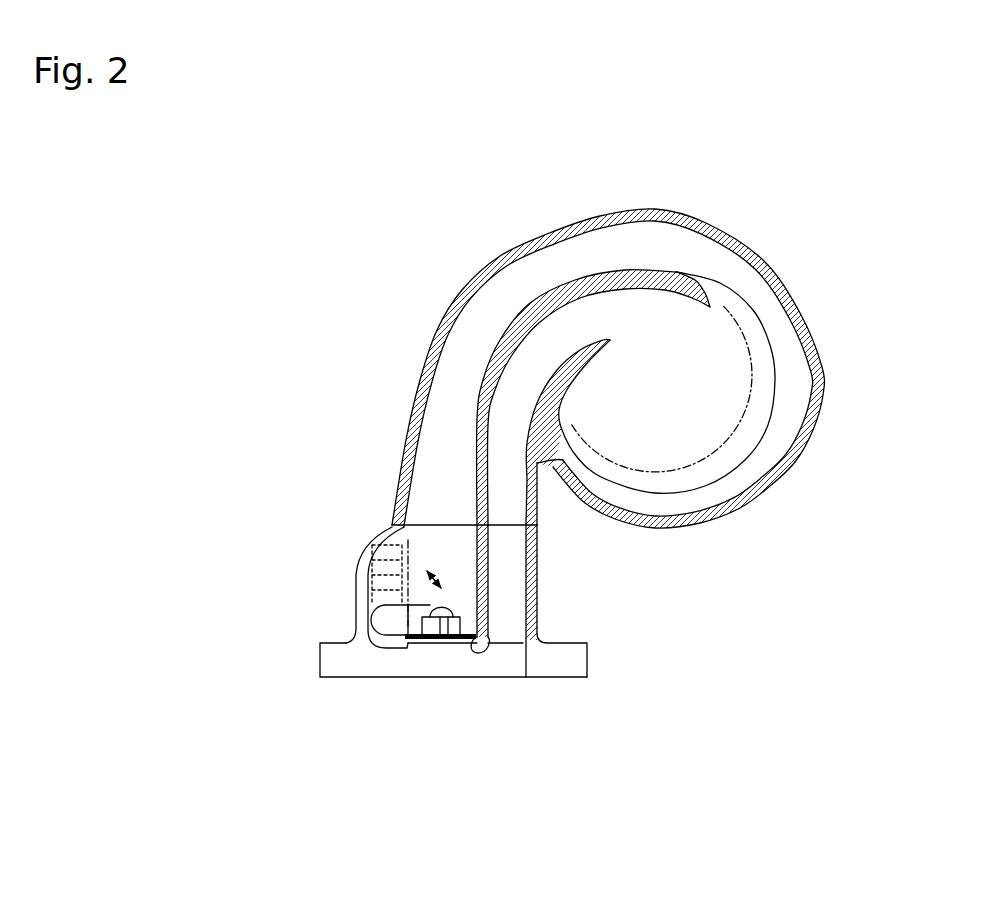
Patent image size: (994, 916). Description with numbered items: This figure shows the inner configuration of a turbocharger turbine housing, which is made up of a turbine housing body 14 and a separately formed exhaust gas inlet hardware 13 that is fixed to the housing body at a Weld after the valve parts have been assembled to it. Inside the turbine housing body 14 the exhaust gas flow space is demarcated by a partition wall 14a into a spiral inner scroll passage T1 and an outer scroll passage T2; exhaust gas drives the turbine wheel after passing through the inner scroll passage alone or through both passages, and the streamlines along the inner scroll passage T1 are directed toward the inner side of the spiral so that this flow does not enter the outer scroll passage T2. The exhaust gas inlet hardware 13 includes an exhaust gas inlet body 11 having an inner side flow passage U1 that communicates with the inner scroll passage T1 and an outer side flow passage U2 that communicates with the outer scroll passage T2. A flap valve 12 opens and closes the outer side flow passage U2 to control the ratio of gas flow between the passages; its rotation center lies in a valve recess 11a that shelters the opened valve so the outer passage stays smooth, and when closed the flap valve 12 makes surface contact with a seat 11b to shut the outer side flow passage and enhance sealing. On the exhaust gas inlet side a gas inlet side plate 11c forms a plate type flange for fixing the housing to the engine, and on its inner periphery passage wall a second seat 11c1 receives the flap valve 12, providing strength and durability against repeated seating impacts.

The turbine housing body 14 is at (822, 348).
The partition wall 14a is at (487, 392).
The inner scroll passage T1 is at (571, 335).
The outer scroll passage T2 is at (486, 335).
The inner side flow passage U1 is at (510, 588).
The outer side flow passage U2 is at (452, 550).
The weld Weld is at (392, 525).
The exhaust gas inlet body 11 is at (348, 665).
The valve recess 11a is at (357, 590).
The seat 11b is at (480, 650).
The gas inlet side plate 11c is at (570, 662).
The second seat 11c1 is at (410, 650).
The flap valve 12 is at (440, 640).
The exhaust gas inlet hardware 13 is at (298, 666).